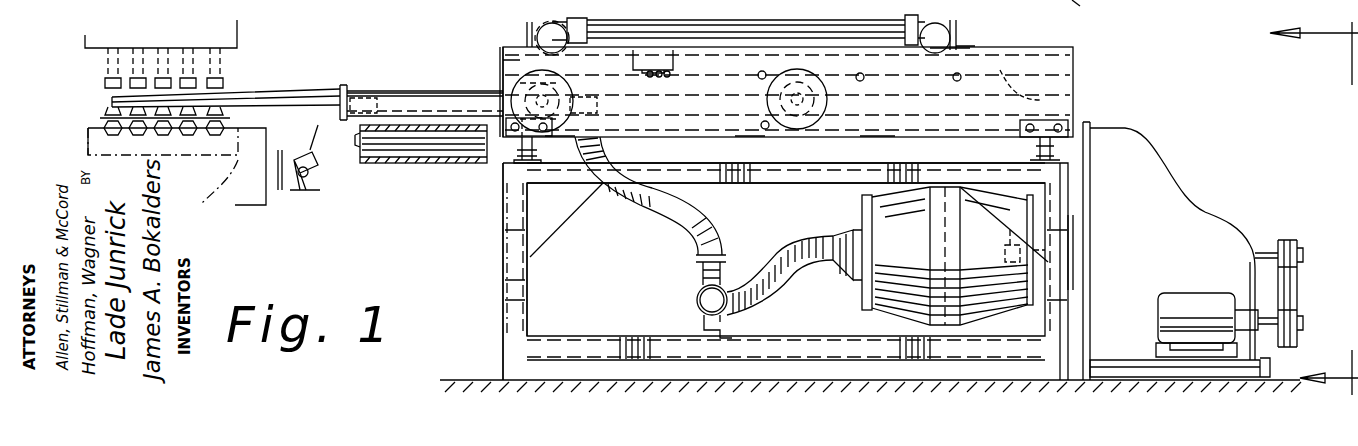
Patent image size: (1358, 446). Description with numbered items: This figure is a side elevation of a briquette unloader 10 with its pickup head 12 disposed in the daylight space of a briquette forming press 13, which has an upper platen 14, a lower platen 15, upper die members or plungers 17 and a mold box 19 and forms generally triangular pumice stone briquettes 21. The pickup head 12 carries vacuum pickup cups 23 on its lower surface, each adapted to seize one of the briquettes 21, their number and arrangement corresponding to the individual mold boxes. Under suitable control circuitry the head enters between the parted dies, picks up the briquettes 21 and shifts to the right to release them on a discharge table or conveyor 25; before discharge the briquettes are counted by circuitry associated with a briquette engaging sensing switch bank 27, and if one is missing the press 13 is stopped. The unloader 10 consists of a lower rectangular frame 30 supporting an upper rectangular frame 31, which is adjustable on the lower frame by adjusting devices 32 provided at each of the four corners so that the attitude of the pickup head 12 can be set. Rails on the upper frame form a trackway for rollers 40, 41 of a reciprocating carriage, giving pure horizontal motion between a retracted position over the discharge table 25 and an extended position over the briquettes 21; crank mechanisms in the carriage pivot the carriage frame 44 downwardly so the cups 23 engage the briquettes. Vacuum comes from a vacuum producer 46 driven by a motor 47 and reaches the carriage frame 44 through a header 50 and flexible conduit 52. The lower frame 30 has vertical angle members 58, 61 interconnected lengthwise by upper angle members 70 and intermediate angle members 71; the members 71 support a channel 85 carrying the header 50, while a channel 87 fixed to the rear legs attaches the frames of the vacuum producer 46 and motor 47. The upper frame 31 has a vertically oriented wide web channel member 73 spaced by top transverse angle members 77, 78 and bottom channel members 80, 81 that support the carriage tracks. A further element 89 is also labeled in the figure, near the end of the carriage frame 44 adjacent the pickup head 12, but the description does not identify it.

The briquette unloader 10 is at (500, 325).
The pickup head 12 is at (296, 96).
The briquette forming press 13 is at (240, 210).
The upper platen 14 is at (85, 35).
The lower platen 15 is at (88, 160).
The upper die members or plungers 17 is at (100, 63).
The mold box 19 is at (200, 205).
The briquettes 21 is at (104, 124).
The vacuum pickup cups 23 is at (225, 118).
The discharge table or conveyor 25 is at (392, 165).
The briquette engaging sensing switch bank 27 is at (298, 195).
The lower rectangular frame 30 is at (494, 294).
The upper rectangular frame 31 is at (494, 64).
The adjusting devices 32 is at (520, 152).
The roller 40 is at (522, 47).
The roller 41 is at (822, 46).
The carriage frame 44 is at (448, 81).
The vacuum producer 46 is at (1158, 164).
The motor 47 is at (1200, 305).
The header 50 is at (696, 295).
The flexible conduit 52 is at (664, 200).
The vertical angle member 58 is at (505, 258).
The vertical angle member 61 is at (1090, 6).
The upper angle members 70 is at (758, 180).
The intermediate angle members 71 is at (824, 358).
The wide web channel member 73 is at (1075, 92).
The top transverse angle member 77 is at (503, 68).
The top transverse angle member 78 is at (958, 30).
The bottom channel member 80 is at (553, 140).
The bottom channel member 81 is at (1012, 148).
The channel 85 is at (728, 325).
The channel 87 is at (1085, 352).
The rod end flange 89 is at (398, 100).